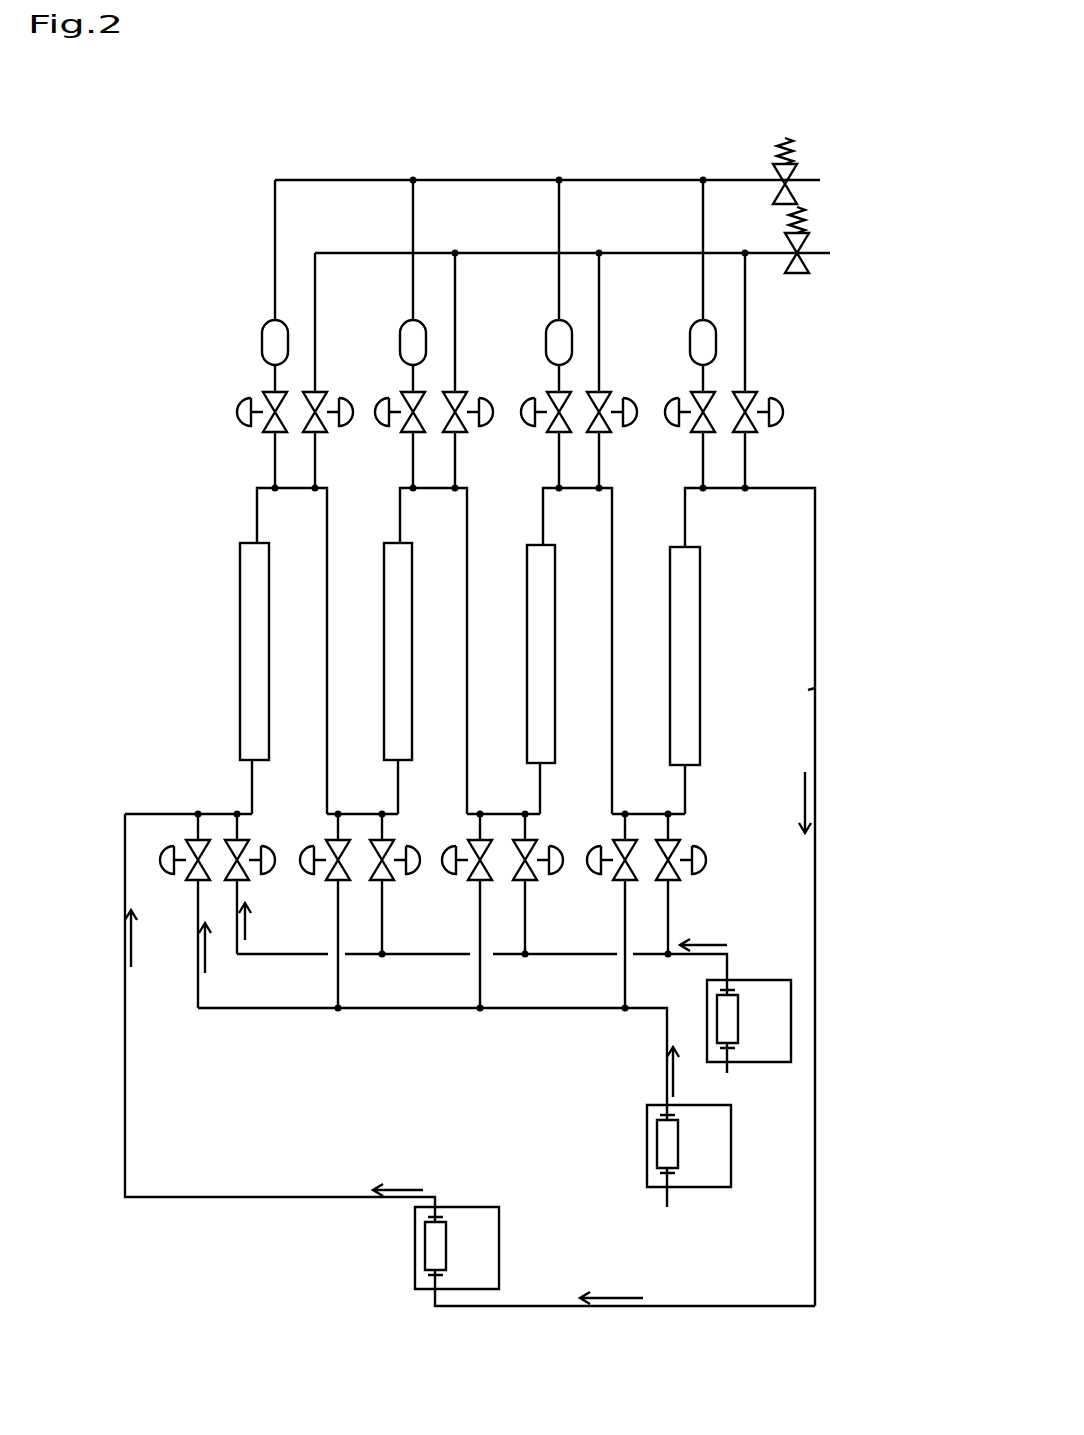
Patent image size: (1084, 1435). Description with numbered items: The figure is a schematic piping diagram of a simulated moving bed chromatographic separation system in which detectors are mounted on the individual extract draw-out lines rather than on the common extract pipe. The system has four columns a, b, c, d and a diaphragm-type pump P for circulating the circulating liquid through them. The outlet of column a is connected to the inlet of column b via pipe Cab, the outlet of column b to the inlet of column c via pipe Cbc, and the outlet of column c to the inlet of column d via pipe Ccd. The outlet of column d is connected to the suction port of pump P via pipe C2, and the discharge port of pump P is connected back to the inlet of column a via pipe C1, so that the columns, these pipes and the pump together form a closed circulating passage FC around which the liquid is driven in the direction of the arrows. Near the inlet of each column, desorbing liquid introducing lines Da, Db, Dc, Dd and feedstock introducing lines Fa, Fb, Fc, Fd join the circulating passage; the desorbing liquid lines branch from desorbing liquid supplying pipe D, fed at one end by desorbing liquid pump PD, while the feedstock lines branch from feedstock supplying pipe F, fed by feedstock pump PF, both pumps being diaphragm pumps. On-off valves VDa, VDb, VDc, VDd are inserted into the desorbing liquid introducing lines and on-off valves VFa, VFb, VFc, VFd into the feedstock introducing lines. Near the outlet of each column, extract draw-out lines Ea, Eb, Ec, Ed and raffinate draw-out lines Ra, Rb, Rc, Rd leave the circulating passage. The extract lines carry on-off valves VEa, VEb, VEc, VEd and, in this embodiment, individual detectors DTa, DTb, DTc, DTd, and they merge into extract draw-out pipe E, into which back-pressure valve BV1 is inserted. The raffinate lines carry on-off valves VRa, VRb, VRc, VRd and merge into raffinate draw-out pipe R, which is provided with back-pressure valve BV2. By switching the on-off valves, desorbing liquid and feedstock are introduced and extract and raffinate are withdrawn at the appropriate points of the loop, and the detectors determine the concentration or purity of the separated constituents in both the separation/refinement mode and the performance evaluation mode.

The extract draw-out pipe E is at (628, 180).
The extract draw-out line Ea is at (275, 270).
The extract draw-out line Eb is at (413, 247).
The extract draw-out line Ec is at (559, 248).
The extract draw-out line Ed is at (703, 253).
The raffinate draw-out pipe R is at (642, 253).
The raffinate draw-out line Ra is at (340, 253).
The raffinate draw-out line Rb is at (456, 276).
The raffinate draw-out line Rc is at (600, 382).
The raffinate draw-out line Rd is at (746, 385).
The back-pressure valve BV1 is at (797, 180).
The back-pressure valve BV2 is at (800, 255).
The detector DTa is at (263, 343).
The detector DTb is at (402, 333).
The detector DTc is at (546, 326).
The detector DTd is at (695, 343).
The on-off valve VEa is at (243, 425).
The on-off valve VEb is at (385, 425).
The on-off valve VEc is at (530, 425).
The on-off valve VEd is at (672, 425).
The on-off valve VRa is at (340, 405).
The on-off valve VRb is at (485, 405).
The on-off valve VRc is at (632, 405).
The on-off valve VRd is at (772, 405).
The pipe Cab is at (327, 530).
The pipe Cbc is at (467, 558).
The pipe Ccd is at (612, 535).
The column a is at (250, 622).
The column b is at (395, 613).
The column c is at (537, 618).
The column d is at (682, 620).
The pipe C2 is at (816, 603).
The circulating passage FC is at (806, 691).
The pipe C1 is at (197, 1198).
The on-off valve VFa is at (268, 858).
The on-off valve VFb is at (412, 858).
The on-off valve VFc is at (555, 858).
The on-off valve VFd is at (692, 858).
The on-off valve VDa is at (178, 857).
The on-off valve VDb is at (318, 857).
The on-off valve VDc is at (460, 857).
The on-off valve VDd is at (605, 857).
The desorbing liquid introducing line Da is at (198, 923).
The desorbing liquid introducing line Db is at (337, 908).
The desorbing liquid introducing line Dc is at (480, 917).
The desorbing liquid introducing line Dd is at (625, 968).
The feedstock introducing line Fa is at (262, 954).
The feedstock introducing line Fb is at (380, 903).
The feedstock introducing line Fc is at (526, 932).
The feedstock introducing line Fd is at (668, 922).
The feedstock supplying pipe F is at (497, 955).
The desorbing liquid supplying pipe D is at (520, 1008).
The feedstock pump PF is at (733, 1020).
The desorbing liquid pump PD is at (667, 1150).
The pump P is at (430, 1255).